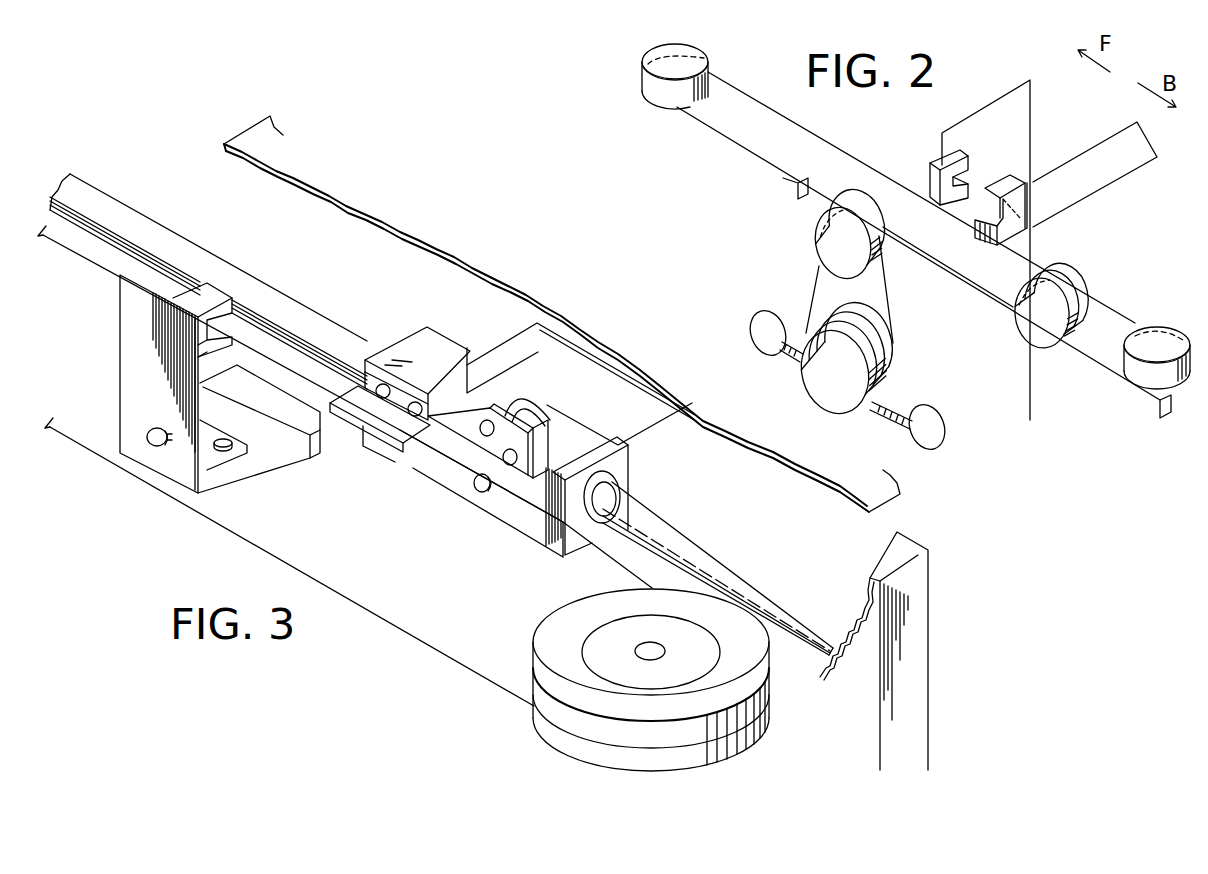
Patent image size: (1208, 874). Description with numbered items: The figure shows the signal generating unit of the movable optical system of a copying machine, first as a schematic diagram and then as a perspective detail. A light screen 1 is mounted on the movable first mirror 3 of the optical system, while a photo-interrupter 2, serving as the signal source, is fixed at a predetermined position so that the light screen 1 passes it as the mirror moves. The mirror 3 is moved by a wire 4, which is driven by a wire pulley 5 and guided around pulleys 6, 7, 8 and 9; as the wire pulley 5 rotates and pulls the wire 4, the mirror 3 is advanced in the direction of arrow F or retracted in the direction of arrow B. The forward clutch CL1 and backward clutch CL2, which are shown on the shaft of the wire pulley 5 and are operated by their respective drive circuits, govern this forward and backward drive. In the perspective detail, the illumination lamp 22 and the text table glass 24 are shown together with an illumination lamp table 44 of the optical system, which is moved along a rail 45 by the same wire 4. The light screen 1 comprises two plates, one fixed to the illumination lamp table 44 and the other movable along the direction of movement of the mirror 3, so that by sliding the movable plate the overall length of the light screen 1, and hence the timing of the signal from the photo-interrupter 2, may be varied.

In FIG. 2, the light screen 1 is at (998, 181).
In FIG. 3, the light screen 1 is at (415, 453).
In FIG. 2, the photo-interrupter 2 is at (937, 162).
In FIG. 3, the photo-interrupter 2 is at (228, 296).
In FIG. 2, the first mirror 3 is at (1110, 140).
In FIG. 2, the wire 4 is at (732, 138).
In FIG. 3, the wire 4 is at (452, 663).
In FIG. 2, the wire pulley 5 is at (897, 353).
In FIG. 2, the pulley 6 is at (641, 66).
In FIG. 2, the pulley 7 is at (1068, 270).
In FIG. 2, the pulley 8 is at (1173, 330).
In FIG. 2, the pulley 9 is at (815, 231).
In FIG. 2, the forward clutch CL1 is at (778, 300).
In FIG. 2, the backward clutch CL2 is at (944, 428).
In FIG. 3, the illumination lamp 22 is at (587, 360).
In FIG. 3, the text table glass 24 is at (747, 443).
In FIG. 3, the illumination lamp table 44 is at (622, 469).
In FIG. 3, the rail 45 is at (778, 578).